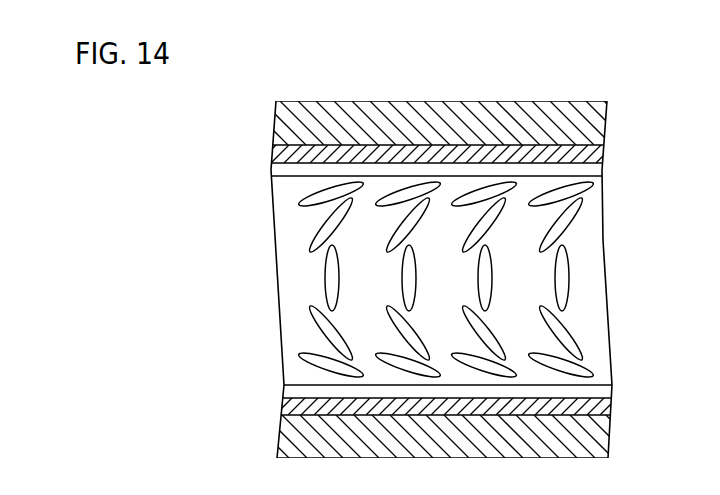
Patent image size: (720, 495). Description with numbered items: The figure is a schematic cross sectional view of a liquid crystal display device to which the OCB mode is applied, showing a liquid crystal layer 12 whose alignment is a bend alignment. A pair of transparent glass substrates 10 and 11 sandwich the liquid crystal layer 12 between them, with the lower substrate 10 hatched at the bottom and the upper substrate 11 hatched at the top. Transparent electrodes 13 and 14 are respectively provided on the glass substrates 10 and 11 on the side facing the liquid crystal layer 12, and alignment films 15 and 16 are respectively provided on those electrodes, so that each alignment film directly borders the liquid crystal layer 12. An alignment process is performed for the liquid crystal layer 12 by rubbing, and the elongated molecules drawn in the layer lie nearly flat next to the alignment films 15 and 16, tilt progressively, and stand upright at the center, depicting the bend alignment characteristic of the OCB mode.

The transparent glass substrate 10 is at (600, 440).
The transparent glass substrate 11 is at (607, 112).
The liquid crystal layer 12 is at (558, 270).
The transparent electrode 13 is at (608, 403).
The transparent electrode 14 is at (600, 152).
The alignment film 15 is at (610, 388).
The alignment film 16 is at (596, 170).